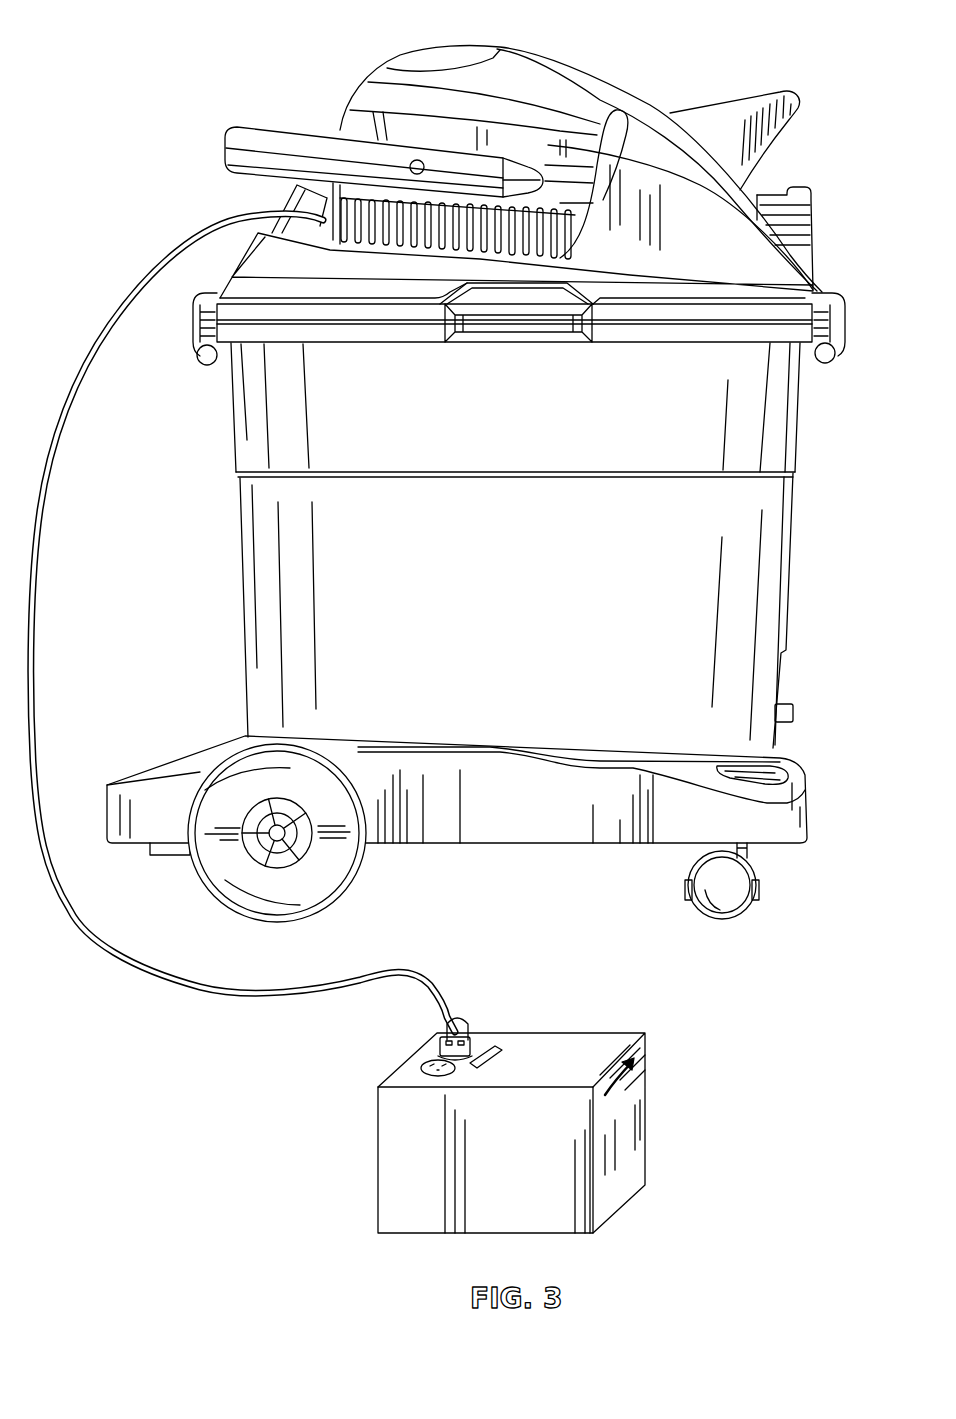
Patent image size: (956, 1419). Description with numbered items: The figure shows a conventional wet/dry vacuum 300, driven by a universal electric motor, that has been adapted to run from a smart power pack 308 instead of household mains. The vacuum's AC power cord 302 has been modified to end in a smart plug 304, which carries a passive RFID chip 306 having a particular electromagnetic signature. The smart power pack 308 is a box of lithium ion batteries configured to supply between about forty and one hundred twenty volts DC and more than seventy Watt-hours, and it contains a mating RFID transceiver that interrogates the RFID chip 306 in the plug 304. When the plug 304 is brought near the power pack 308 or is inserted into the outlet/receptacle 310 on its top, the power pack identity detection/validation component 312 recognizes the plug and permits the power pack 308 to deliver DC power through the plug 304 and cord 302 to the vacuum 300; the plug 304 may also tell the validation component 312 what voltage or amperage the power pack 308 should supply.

The wet/dry vacuum 300 is at (476, 484).
The AC power cord 302 is at (386, 966).
The smart plug 304 is at (462, 1030).
The RFID chip 306 is at (436, 1032).
The smart power pack 308 is at (390, 1152).
The outlet/receptacle 310 is at (420, 1062).
The power pack identity detection/validation component 312 is at (496, 1046).